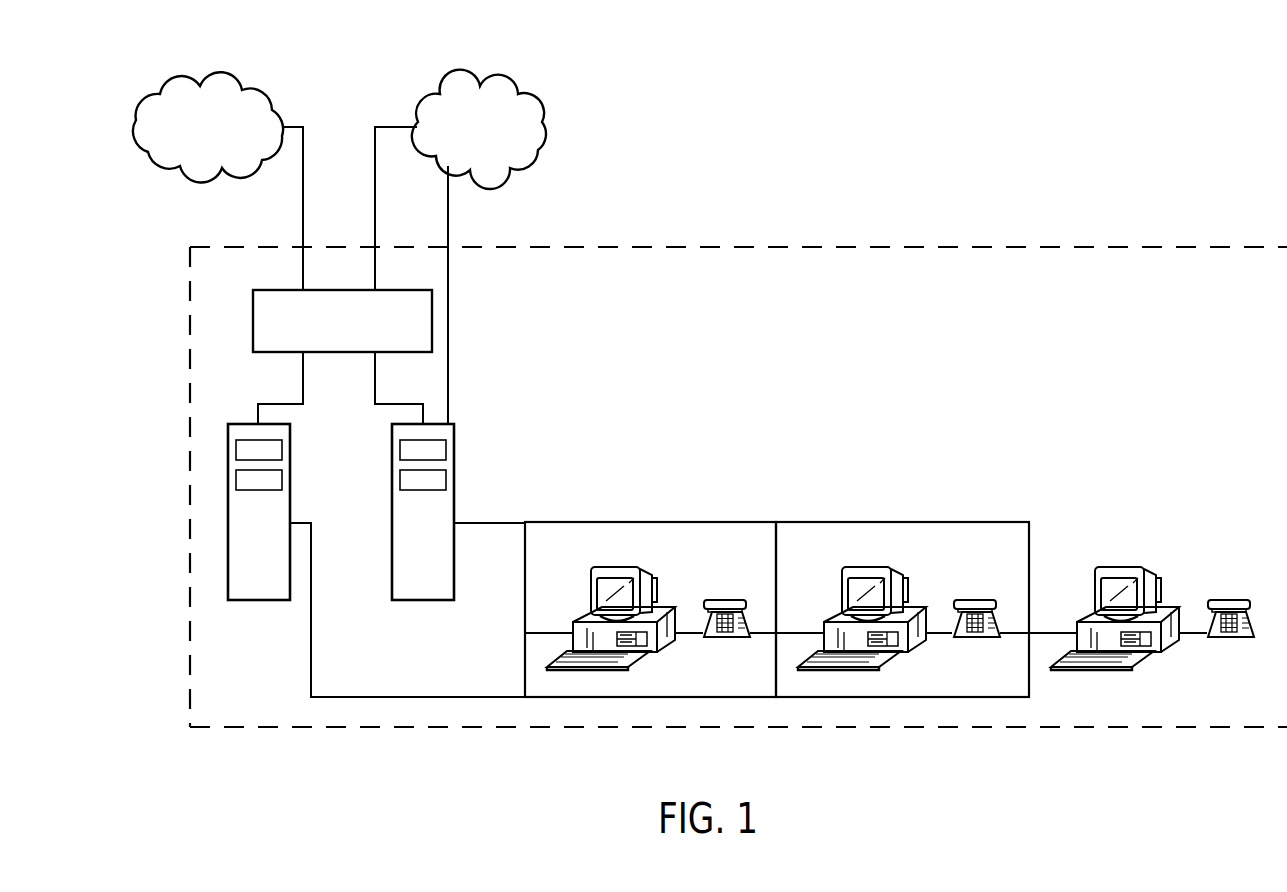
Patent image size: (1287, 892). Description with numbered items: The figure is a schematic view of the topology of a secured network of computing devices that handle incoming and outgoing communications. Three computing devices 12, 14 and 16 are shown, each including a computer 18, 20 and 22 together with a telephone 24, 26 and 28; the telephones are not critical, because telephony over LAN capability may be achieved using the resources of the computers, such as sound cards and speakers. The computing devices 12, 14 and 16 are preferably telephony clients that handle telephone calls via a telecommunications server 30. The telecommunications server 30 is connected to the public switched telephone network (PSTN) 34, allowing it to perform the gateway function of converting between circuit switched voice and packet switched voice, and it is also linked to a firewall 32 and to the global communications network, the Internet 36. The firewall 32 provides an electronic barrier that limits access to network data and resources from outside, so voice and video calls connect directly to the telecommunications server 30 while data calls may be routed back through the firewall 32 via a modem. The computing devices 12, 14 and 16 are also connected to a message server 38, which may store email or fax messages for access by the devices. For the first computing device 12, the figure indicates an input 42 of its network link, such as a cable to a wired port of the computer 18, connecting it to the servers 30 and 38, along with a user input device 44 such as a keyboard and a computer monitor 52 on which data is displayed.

The computing device 12 is at (714, 562).
The computing device 14 is at (964, 562).
The computing device 16 is at (1218, 562).
The computer 18 is at (624, 618).
The computer 20 is at (911, 641).
The computer 22 is at (1167, 641).
The telephone 24 is at (710, 640).
The telephone 26 is at (971, 639).
The telephone 28 is at (1228, 639).
The telecommunications server 30 is at (422, 602).
The firewall 32 is at (253, 318).
The public switched telephone network (PSTN) 34 is at (524, 86).
The Internet 36 is at (196, 85).
The message server 38 is at (260, 602).
The input 42 is at (546, 632).
The user input device 44 is at (637, 656).
The computer monitor 52 is at (608, 588).